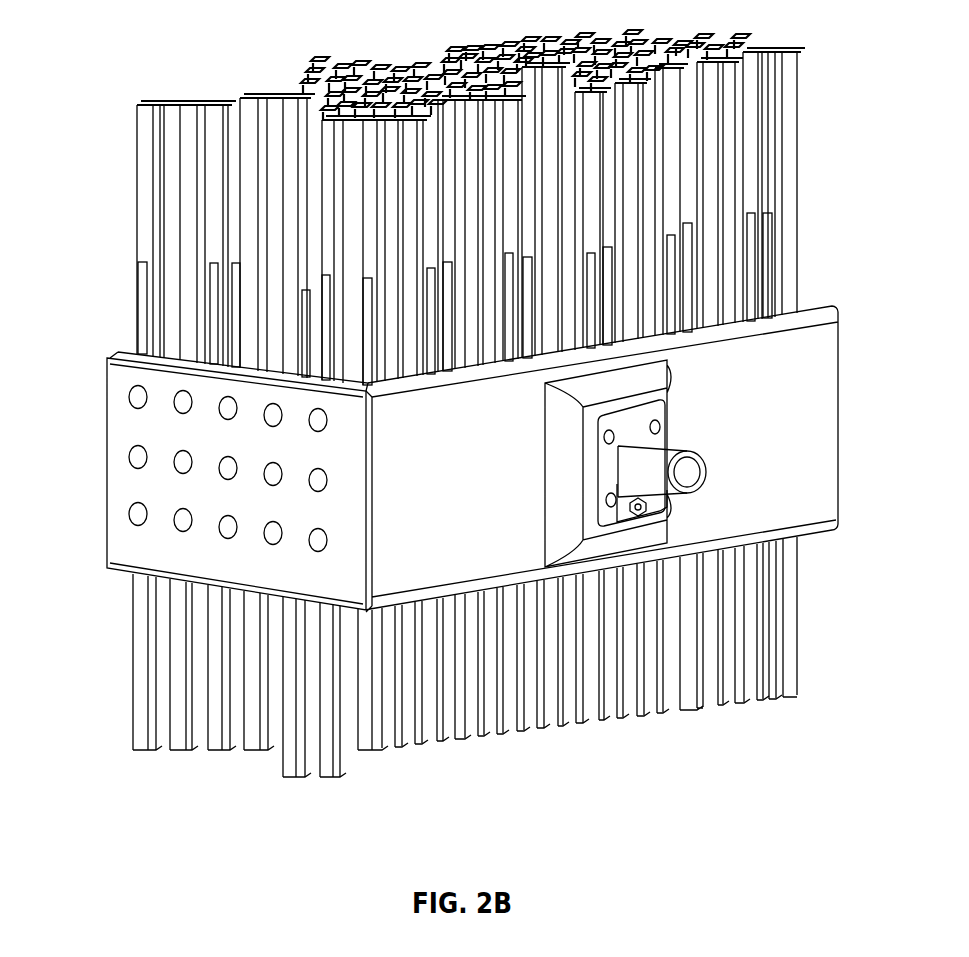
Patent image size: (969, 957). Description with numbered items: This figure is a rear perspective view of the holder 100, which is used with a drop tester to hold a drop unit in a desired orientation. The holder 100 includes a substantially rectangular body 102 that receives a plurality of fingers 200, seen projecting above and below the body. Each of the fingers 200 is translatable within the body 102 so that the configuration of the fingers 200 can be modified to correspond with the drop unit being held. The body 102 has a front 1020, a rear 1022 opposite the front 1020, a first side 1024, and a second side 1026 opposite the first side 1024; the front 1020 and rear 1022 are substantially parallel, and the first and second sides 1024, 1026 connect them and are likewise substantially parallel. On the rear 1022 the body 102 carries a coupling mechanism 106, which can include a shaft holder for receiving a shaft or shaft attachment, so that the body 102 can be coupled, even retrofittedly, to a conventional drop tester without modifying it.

The holder 100 is at (476, 403).
The body 102 is at (470, 447).
The front 1020 is at (130, 353).
The rear 1022 is at (825, 360).
The first side 1024 is at (812, 307).
The second side 1026 is at (116, 490).
The coupling mechanism 106 is at (667, 447).
The fingers 200 is at (170, 162).